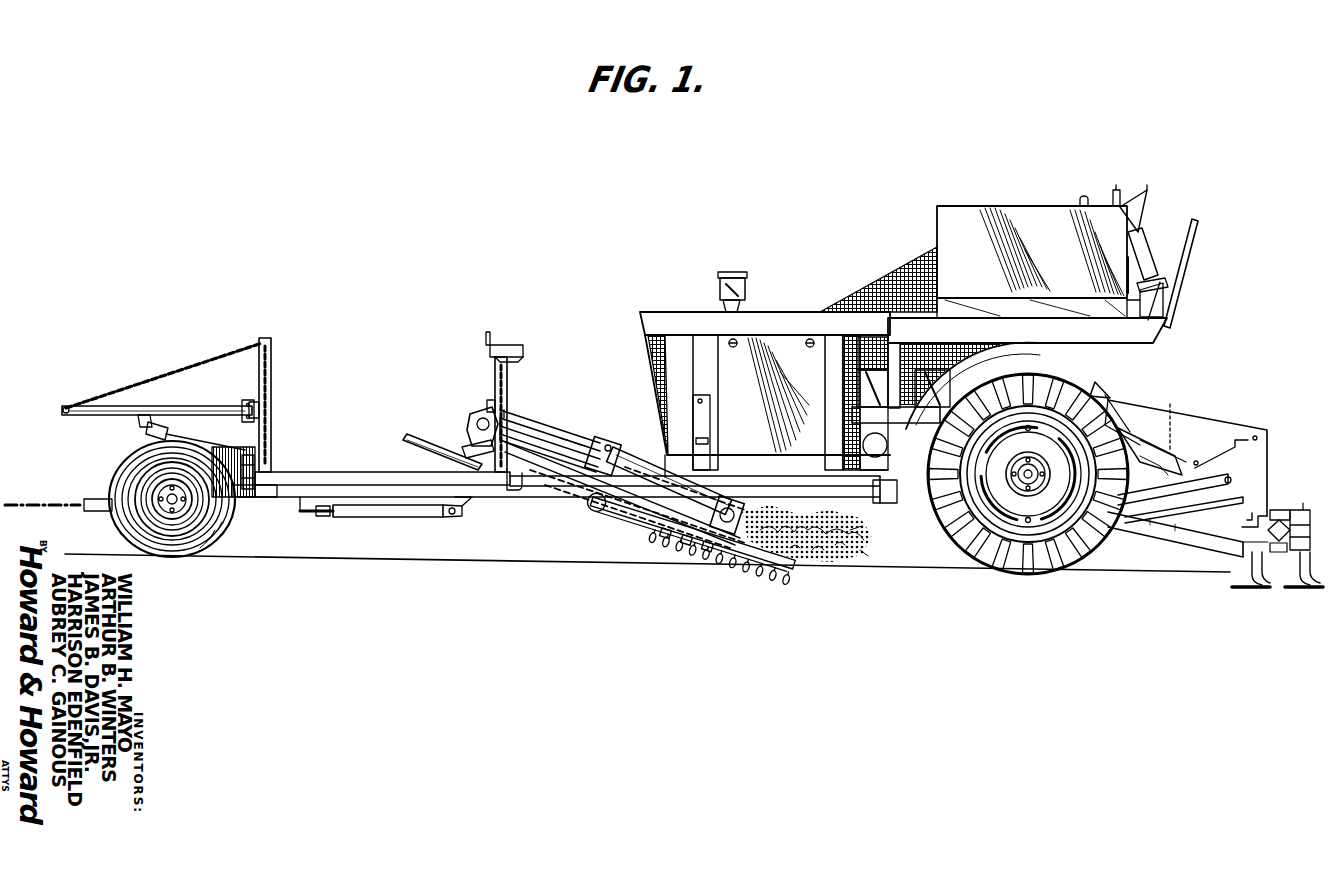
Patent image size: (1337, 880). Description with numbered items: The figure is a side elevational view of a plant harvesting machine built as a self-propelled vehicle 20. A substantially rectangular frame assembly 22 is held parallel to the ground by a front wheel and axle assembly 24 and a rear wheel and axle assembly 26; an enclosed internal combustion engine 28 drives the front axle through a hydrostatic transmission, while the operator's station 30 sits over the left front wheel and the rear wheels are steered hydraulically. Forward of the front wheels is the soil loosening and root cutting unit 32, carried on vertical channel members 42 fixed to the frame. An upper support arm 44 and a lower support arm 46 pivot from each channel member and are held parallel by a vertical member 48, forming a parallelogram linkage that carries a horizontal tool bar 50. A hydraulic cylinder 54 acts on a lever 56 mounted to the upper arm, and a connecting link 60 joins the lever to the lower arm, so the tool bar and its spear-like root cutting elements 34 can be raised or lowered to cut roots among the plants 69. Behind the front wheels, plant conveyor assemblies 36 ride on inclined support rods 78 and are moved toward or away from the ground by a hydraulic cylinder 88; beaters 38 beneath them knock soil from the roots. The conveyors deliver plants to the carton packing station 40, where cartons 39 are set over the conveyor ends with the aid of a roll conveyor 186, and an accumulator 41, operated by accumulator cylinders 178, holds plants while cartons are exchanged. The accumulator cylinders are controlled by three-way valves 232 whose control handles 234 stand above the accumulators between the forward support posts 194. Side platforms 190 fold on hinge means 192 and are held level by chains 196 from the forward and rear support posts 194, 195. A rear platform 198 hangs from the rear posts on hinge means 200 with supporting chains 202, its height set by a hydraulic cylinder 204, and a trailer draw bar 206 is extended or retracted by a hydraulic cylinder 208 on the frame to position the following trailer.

The self-propelled vehicle 20 is at (1028, 200).
The frame assembly 22 is at (540, 490).
The front wheel and axle assembly 24 is at (985, 568).
The rear wheel and axle assembly 26 is at (190, 548).
The internal combustion engine 28 is at (655, 352).
The operator's station 30 is at (1135, 248).
The soil loosening and root cutting unit 32 is at (1291, 504).
The soil loosening and root cutting elements 34 is at (1248, 590).
The plant conveyor assemblies 36 is at (564, 424).
The beaters 38 is at (660, 538).
The packing cartons 39 is at (588, 438).
The carton packing station 40 is at (463, 423).
The accumulator 41 is at (462, 447).
The vertical channel members 42 is at (1110, 395).
The upper support arm 44 is at (1178, 425).
The lower support arm 46 is at (1170, 537).
The vertical member 48 is at (1262, 460).
The tool bar 50 is at (1268, 547).
The hydraulic cylinder 54 is at (1162, 470).
The lever 56 is at (1200, 480).
The connecting link 60 is at (1175, 496).
The plants 69 is at (866, 530).
The inclined support rods 78 is at (522, 437).
The hydraulic cylinder 88 is at (634, 455).
The accumulator cylinders 178 is at (612, 510).
The roll conveyor 186 is at (425, 453).
The side platforms 190 is at (340, 471).
The hinge means 192 is at (258, 490).
The forward vertical support post 194 is at (495, 367).
The rear vertical support post 195 is at (272, 375).
The chains 196 is at (271, 420).
The rear platform 198 is at (192, 406).
The hinge means 200 is at (246, 413).
The supporting chains 202 is at (172, 372).
The hydraulic cylinder 204 is at (140, 430).
The trailer draw bar 206 is at (93, 504).
The hydraulic cylinder 208 is at (390, 517).
The three-way valves 232 is at (510, 346).
The control handles 234 is at (484, 337).